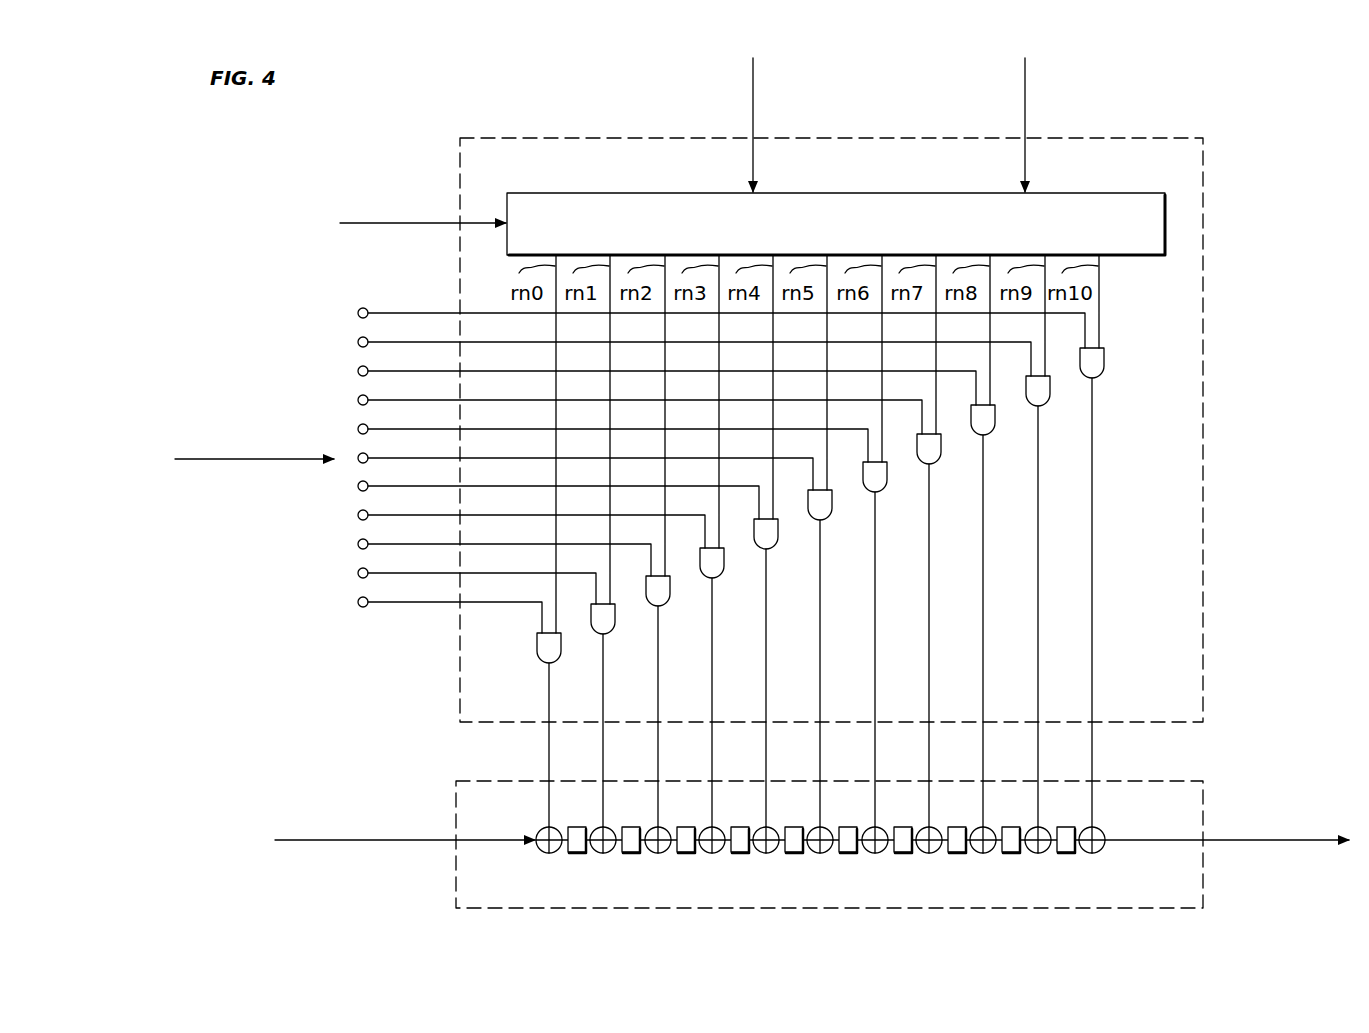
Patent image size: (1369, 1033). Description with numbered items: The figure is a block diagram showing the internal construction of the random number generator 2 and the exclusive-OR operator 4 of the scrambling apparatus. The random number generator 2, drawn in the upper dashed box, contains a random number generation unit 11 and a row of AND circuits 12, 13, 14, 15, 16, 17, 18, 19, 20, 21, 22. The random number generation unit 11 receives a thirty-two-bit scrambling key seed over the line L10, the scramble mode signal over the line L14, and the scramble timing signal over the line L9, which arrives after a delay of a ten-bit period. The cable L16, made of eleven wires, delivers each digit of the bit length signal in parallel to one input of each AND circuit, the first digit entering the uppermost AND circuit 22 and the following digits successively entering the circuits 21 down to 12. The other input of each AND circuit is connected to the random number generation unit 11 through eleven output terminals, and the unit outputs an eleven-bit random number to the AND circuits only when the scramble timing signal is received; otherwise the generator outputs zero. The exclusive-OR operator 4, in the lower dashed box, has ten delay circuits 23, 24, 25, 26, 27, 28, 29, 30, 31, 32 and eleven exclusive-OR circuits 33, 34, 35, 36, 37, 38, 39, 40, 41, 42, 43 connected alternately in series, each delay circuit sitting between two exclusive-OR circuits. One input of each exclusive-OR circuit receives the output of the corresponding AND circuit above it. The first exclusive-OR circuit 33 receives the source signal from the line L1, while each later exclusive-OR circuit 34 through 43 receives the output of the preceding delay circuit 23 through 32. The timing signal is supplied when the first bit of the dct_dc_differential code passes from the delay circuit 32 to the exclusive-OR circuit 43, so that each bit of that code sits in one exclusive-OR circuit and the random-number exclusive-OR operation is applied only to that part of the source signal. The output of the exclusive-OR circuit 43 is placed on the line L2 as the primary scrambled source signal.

The random number generator 2 is at (1165, 140).
The exclusive-OR operator 4 is at (1172, 781).
The random number generation unit 11 is at (1105, 193).
The AND circuit 12 is at (556, 662).
The AND circuit 13 is at (610, 633).
The AND circuit 14 is at (665, 605).
The AND circuit 15 is at (719, 577).
The AND circuit 16 is at (773, 548).
The AND circuit 17 is at (827, 519).
The AND circuit 18 is at (882, 491).
The AND circuit 19 is at (936, 463).
The AND circuit 20 is at (990, 434).
The AND circuit 21 is at (1045, 405).
The AND circuit 22 is at (1099, 377).
The delay circuit 23 is at (578, 826).
The delay circuit 24 is at (632, 826).
The delay circuit 25 is at (687, 826).
The delay circuit 26 is at (741, 826).
The delay circuit 27 is at (795, 826).
The delay circuit 28 is at (849, 826).
The delay circuit 29 is at (904, 826).
The delay circuit 30 is at (958, 826).
The delay circuit 31 is at (1012, 826).
The delay circuit 32 is at (1067, 826).
The exclusive-OR circuit 33 is at (545, 853).
The exclusive-OR circuit 34 is at (599, 853).
The exclusive-OR circuit 35 is at (654, 853).
The exclusive-OR circuit 36 is at (708, 853).
The exclusive-OR circuit 37 is at (762, 853).
The exclusive-OR circuit 38 is at (816, 853).
The exclusive-OR circuit 39 is at (871, 853).
The exclusive-OR circuit 40 is at (925, 853).
The exclusive-OR circuit 41 is at (979, 853).
The exclusive-OR circuit 42 is at (1034, 853).
The exclusive-OR circuit 43 is at (1088, 853).
The line L1 is at (328, 841).
The line L2 is at (1243, 841).
The line L9 is at (358, 222).
The line L10 is at (753, 118).
The line L14 is at (1025, 118).
The cable L16 is at (243, 460).